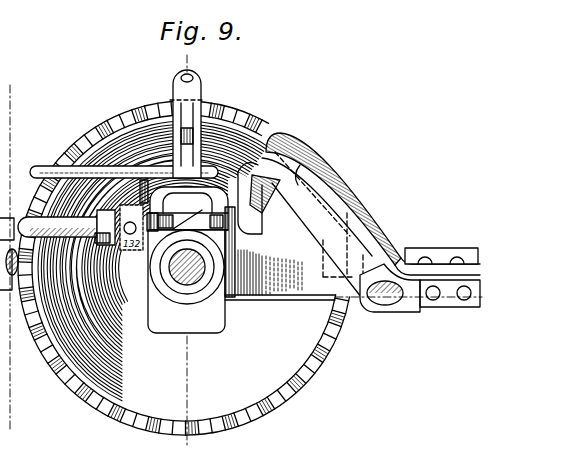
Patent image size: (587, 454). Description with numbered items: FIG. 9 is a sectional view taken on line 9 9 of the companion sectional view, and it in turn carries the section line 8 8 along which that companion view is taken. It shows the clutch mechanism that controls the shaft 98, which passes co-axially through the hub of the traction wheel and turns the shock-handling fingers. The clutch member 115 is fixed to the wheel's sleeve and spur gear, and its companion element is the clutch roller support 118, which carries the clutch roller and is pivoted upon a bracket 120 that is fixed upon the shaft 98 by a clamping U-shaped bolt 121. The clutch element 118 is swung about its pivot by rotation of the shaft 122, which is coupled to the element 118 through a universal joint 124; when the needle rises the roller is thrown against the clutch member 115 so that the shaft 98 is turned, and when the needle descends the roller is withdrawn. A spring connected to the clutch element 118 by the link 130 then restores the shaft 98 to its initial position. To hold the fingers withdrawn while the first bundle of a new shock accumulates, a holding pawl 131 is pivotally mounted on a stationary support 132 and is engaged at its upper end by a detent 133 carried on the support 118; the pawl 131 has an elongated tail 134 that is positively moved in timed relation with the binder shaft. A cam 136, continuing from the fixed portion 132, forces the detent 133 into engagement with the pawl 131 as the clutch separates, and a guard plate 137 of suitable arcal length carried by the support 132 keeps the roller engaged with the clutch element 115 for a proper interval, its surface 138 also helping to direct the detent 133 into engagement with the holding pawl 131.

The section line 8 8 is at (200, 61).
The section line 9 9 is at (22, 96).
The shaft 98 is at (187, 269).
The clutch member 115 is at (150, 372).
The clutch roller support 118 is at (214, 138).
The bracket 120 is at (234, 242).
The clamping U-shaped bolt 121 is at (240, 230).
The shaft 122 is at (79, 235).
The universal joint 124 is at (115, 243).
The link 130 is at (35, 167).
The holding pawl 131 is at (327, 210).
The stationary support 132 is at (447, 248).
The detent 133 is at (175, 126).
The elongated tail 134 is at (475, 300).
The cam 136 is at (300, 200).
The guard plate 137 is at (259, 136).
The surface 138 is at (299, 180).